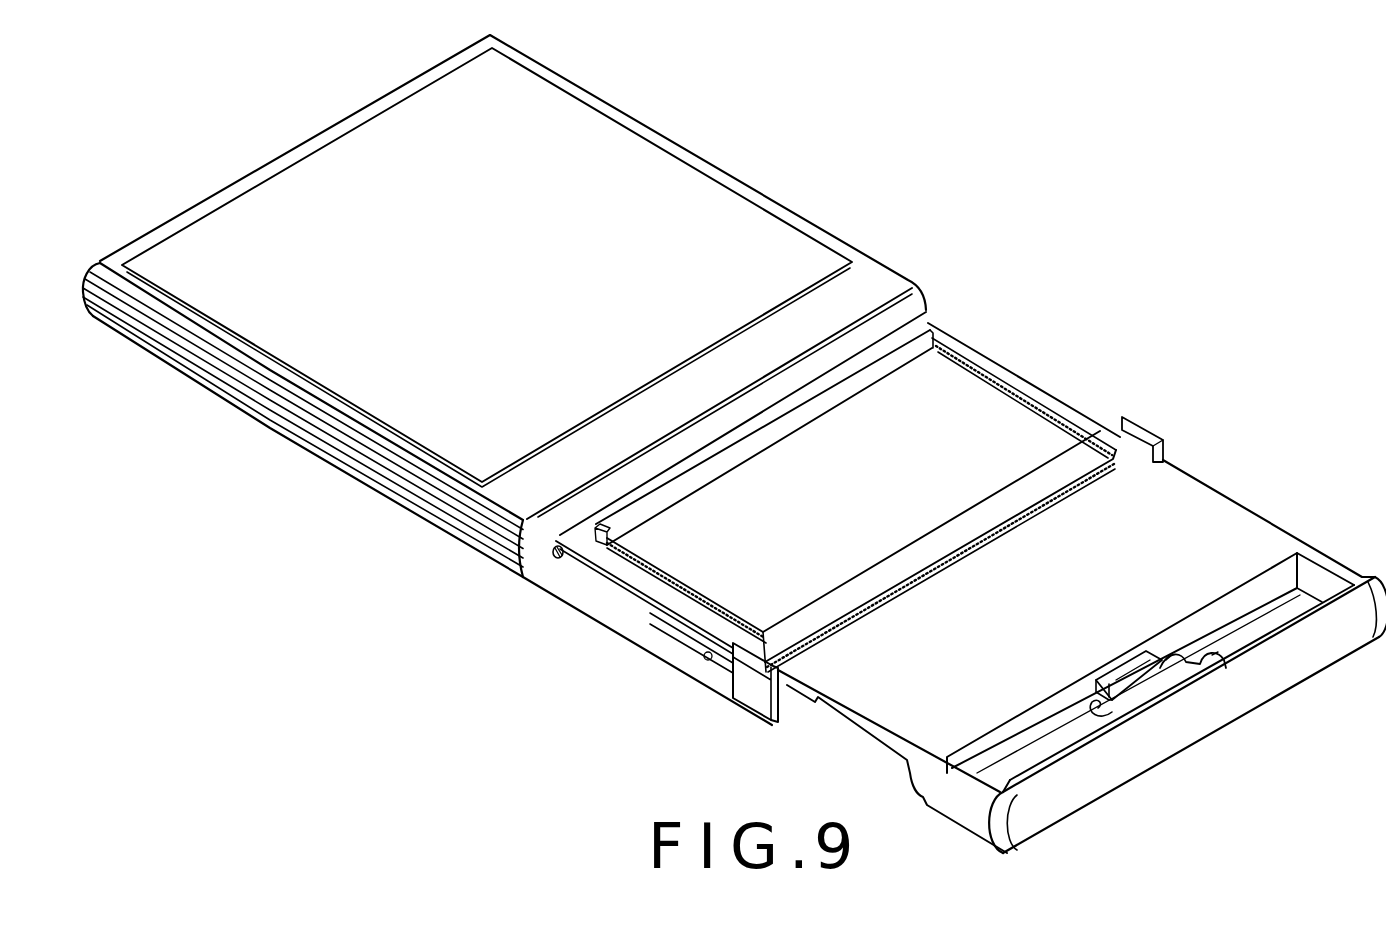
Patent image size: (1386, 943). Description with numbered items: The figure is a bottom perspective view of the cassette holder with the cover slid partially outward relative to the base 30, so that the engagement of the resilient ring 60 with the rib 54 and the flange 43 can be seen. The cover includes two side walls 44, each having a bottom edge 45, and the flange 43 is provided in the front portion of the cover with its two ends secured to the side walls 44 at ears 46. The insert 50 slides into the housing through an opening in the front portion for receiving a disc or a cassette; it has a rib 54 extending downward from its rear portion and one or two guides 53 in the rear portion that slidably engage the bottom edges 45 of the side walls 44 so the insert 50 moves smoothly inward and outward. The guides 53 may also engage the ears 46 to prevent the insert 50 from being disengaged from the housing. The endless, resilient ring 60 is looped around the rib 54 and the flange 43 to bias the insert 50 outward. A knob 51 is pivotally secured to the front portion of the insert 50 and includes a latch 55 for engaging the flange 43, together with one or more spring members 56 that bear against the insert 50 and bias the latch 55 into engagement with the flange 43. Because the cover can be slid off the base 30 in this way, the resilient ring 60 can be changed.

The base 30 is at (662, 140).
The flange 43 is at (1062, 470).
The side walls 44 is at (597, 605).
The bottom edge 45 is at (657, 614).
The ears 46 is at (750, 664).
The insert 50 is at (1207, 510).
The knob 51 is at (1158, 752).
The guides 53 is at (556, 554).
The rib 54 is at (890, 355).
The latch 55 is at (1150, 685).
The spring members 56 is at (1226, 658).
The resilient ring 60 is at (1018, 393).